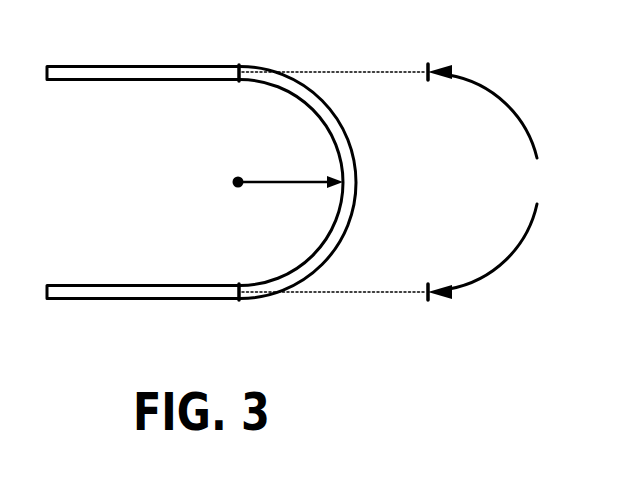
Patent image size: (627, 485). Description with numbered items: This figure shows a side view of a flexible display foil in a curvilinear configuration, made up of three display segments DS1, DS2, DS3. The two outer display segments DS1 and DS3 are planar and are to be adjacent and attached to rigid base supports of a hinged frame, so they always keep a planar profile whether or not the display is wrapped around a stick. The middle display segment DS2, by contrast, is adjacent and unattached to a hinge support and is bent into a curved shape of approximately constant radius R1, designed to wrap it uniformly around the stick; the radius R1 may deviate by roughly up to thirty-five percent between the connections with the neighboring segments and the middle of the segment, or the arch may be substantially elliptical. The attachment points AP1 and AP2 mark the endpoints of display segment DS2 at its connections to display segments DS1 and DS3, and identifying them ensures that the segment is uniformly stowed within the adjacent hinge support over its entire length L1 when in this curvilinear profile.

The display segment DS3 is at (142, 66).
The display segment DS1 is at (142, 299).
The display segment DS2 is at (355, 174).
The attachment point AP2 is at (236, 66).
The attachment point AP1 is at (238, 299).
The radius R1 is at (288, 172).
The length L1 is at (396, 182).